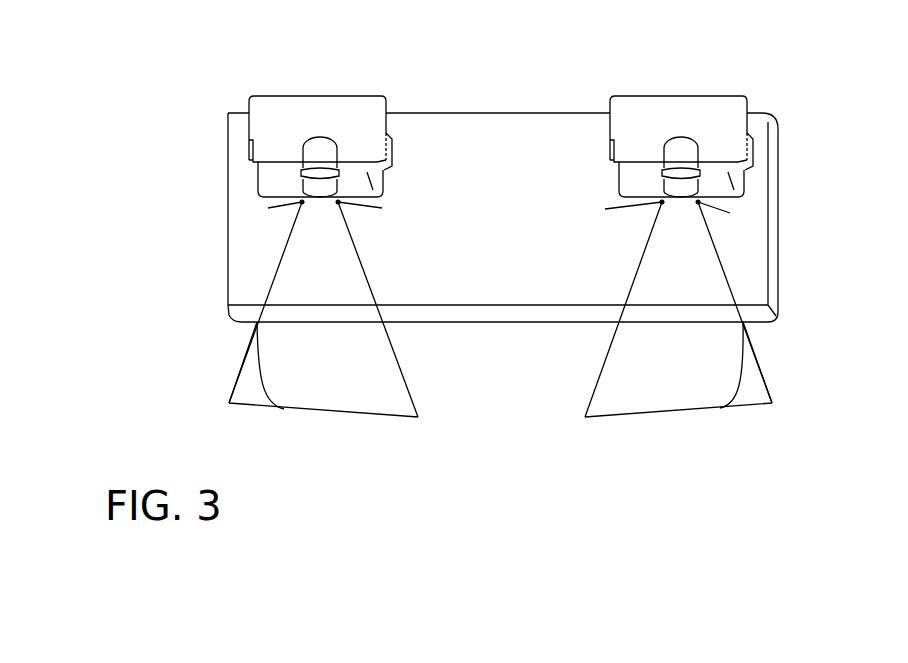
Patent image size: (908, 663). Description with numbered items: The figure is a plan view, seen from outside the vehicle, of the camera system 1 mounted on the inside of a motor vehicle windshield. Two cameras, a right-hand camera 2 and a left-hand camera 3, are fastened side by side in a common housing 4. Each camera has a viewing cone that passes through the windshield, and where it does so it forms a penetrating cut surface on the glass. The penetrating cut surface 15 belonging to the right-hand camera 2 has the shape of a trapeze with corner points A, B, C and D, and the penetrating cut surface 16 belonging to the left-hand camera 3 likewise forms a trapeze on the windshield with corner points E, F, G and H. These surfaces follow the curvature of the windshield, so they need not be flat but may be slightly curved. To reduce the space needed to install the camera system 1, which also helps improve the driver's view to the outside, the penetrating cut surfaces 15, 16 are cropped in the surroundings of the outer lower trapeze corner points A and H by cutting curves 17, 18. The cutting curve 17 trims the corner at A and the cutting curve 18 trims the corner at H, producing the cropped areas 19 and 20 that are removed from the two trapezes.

The camera system 1 is at (795, 88).
The right-hand camera 2 is at (302, 183).
The left-hand camera 3 is at (697, 184).
The housing 4 is at (445, 113).
The penetrating cut surface 15 is at (354, 390).
The penetrating cut surface 16 is at (648, 388).
The cutting curve 17 is at (262, 387).
The cutting curve 18 is at (743, 353).
The cropped area 19 is at (250, 375).
The cropped area 20 is at (750, 388).